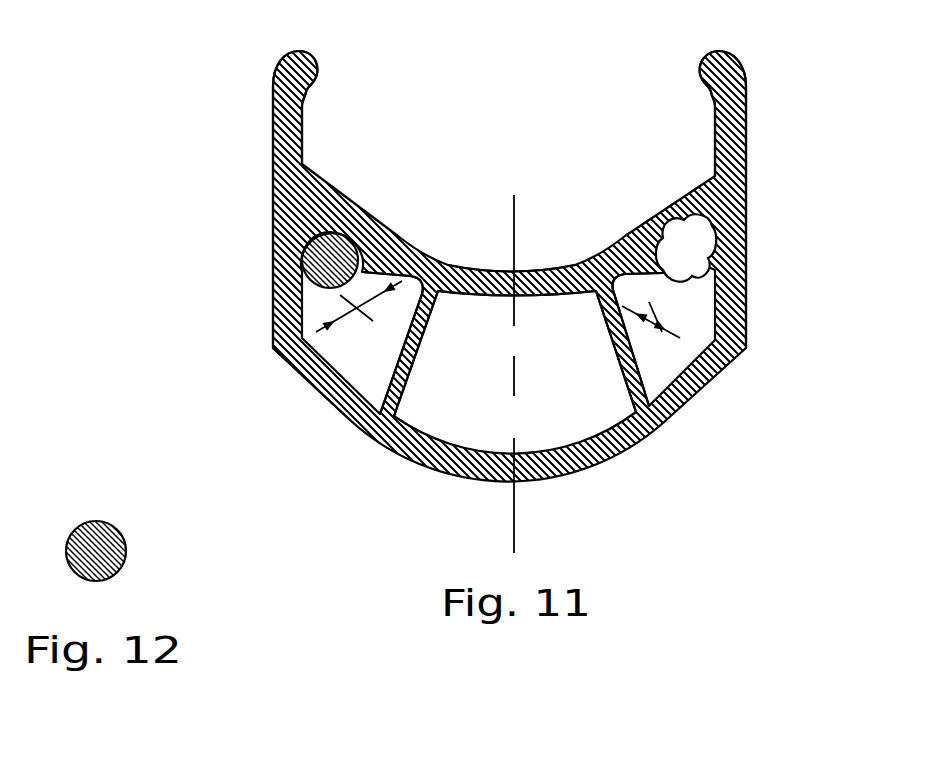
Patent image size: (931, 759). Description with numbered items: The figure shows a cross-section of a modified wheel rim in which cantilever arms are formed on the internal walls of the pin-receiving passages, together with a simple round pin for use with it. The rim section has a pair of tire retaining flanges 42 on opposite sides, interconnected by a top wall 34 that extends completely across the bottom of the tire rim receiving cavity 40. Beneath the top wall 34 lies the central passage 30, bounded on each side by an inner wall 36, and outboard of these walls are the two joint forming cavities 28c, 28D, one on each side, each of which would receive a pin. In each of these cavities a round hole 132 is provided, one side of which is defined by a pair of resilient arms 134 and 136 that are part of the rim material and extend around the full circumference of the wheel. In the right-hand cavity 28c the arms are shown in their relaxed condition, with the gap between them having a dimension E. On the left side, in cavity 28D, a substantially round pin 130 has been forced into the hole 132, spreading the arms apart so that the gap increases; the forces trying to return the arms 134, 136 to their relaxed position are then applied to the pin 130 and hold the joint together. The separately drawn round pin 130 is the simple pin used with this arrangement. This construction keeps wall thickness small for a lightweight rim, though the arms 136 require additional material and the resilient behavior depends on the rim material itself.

In FIG. 11, the cavity 28c is at (688, 387).
In FIG. 11, the cavity 28D is at (340, 362).
In FIG. 11, the central passage 30 is at (577, 342).
In FIG. 11, the top wall 34 is at (523, 262).
In FIG. 11, the inner wall 36 is at (404, 360).
In FIG. 11, the tire rim receiving cavity 40 is at (565, 168).
In FIG. 11, the flange 42 is at (264, 130).
In FIG. 11, the round pin 130 is at (334, 223).
In FIG. 12, the round pin 130 is at (113, 516).
In FIG. 11, the round hole 132 is at (688, 250).
In FIG. 11, the resilient arm 134 is at (291, 272).
In FIG. 11, the resilient arm 136 is at (393, 262).
In FIG. 11, the gap dimension E is at (652, 336).